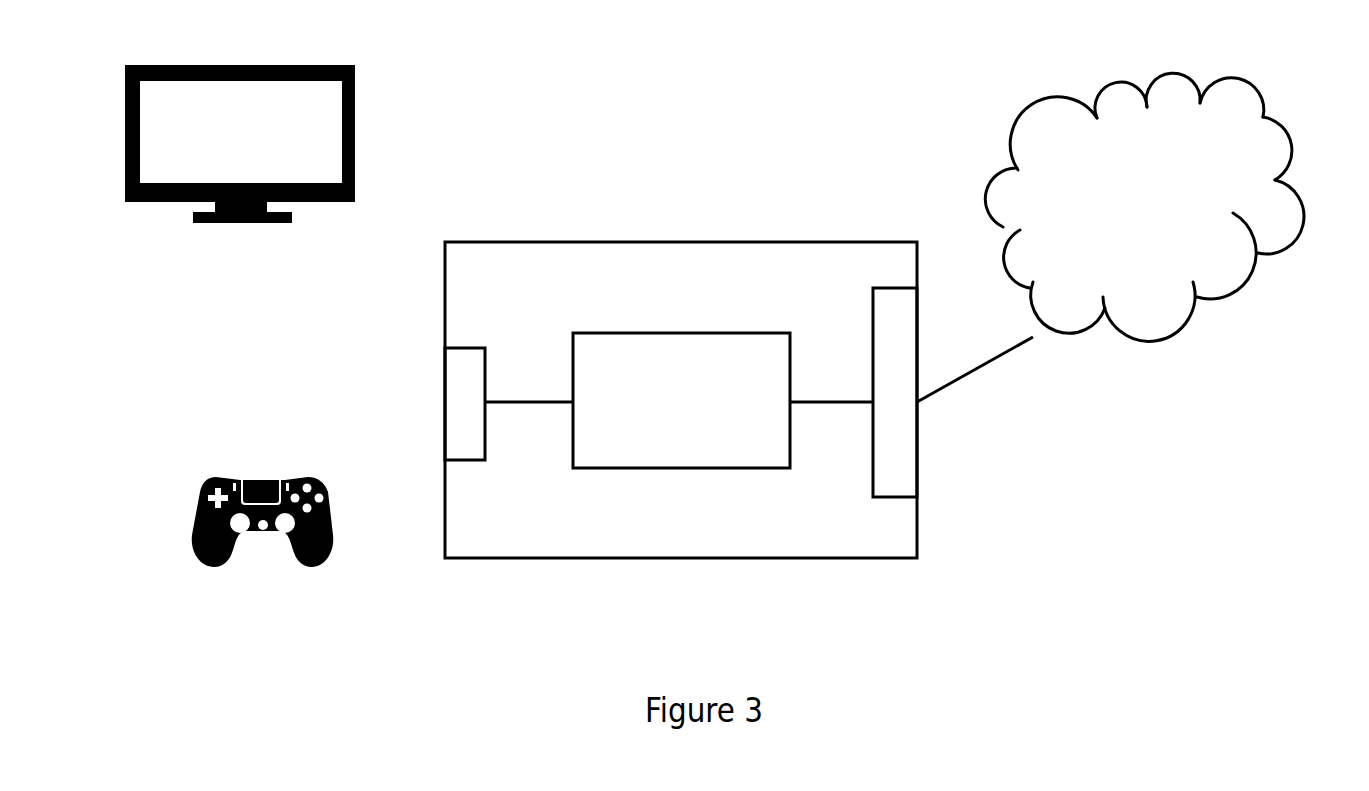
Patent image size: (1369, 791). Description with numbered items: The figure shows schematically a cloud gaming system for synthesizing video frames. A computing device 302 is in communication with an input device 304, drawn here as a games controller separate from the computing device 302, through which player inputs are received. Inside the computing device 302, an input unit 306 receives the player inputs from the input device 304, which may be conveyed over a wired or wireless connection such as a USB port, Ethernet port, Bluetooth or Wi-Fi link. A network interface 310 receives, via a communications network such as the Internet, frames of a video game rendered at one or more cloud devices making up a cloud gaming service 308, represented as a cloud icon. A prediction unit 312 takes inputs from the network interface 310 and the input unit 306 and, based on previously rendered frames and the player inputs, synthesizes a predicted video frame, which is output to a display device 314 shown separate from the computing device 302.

The computing device 302 is at (660, 242).
The input device 304 is at (257, 478).
The input unit 306 is at (487, 353).
The cloud gaming service 308 is at (1245, 342).
The network interface 310 is at (873, 358).
The prediction unit 312 is at (690, 333).
The display device 314 is at (355, 128).